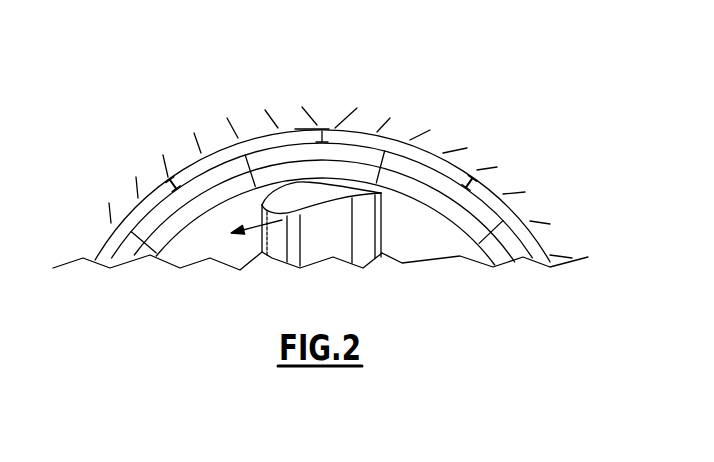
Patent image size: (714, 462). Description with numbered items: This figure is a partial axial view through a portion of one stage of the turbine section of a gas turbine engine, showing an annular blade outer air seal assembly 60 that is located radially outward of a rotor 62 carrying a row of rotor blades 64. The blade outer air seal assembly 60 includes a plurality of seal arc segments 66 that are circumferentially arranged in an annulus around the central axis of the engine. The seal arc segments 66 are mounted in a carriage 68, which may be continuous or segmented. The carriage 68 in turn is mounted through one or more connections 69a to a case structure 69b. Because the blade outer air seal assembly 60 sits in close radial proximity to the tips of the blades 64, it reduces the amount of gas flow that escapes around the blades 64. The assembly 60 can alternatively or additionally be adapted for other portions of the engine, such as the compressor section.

The blade outer air seal assembly 60 is at (494, 212).
The rotor 62 is at (367, 246).
The rotor blades 64 is at (262, 253).
The seal arc segments 66 is at (370, 160).
The carriage 68 is at (343, 142).
The connections 69a is at (295, 129).
The case structure 69b is at (493, 190).